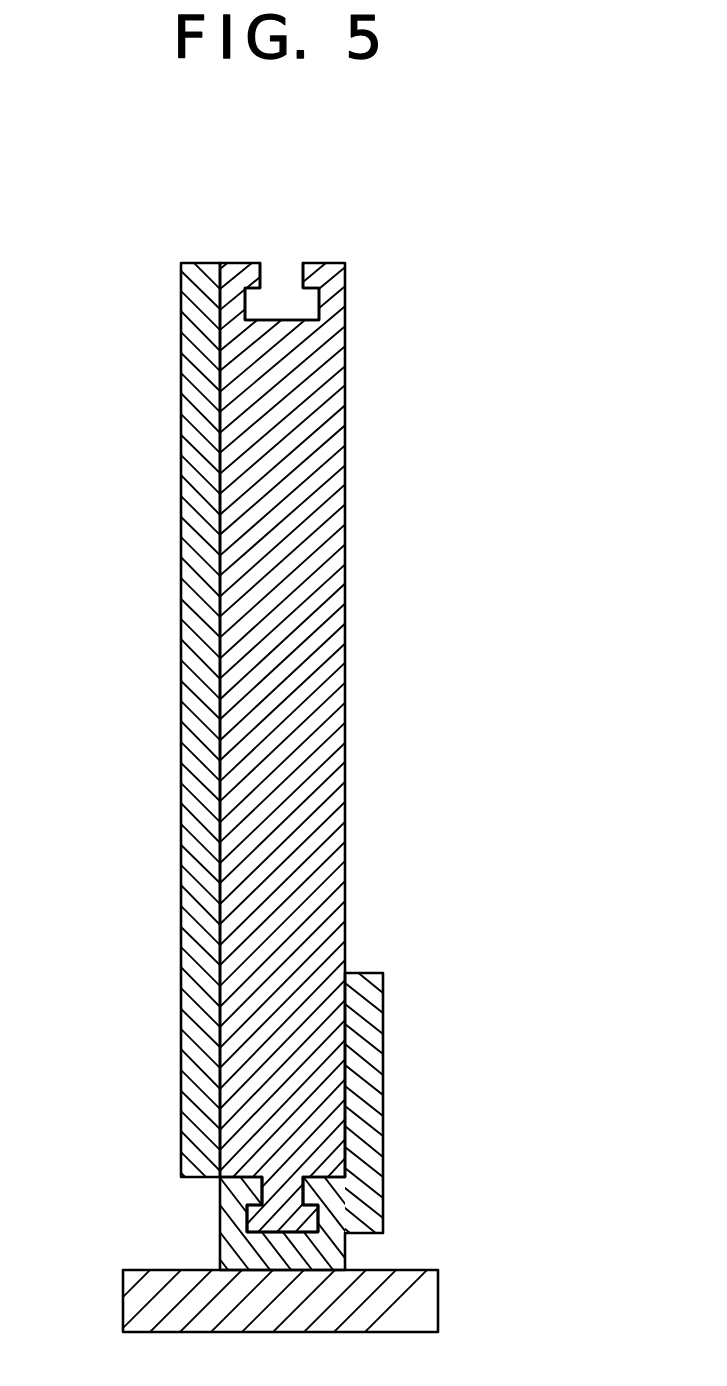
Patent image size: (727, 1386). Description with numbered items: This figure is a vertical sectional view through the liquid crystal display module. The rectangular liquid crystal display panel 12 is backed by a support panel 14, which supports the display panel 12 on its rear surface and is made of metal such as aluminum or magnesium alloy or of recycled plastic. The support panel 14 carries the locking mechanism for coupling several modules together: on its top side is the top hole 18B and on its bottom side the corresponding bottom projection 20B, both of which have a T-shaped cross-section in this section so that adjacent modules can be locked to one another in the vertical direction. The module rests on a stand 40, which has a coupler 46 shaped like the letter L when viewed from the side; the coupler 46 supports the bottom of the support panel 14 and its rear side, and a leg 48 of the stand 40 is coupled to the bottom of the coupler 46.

The liquid crystal display panel 12 is at (181, 673).
The support panel 14 is at (345, 545).
The top hole 18B is at (284, 275).
The bottom projection 20B is at (246, 1215).
The stand 40 is at (341, 1137).
The coupler 46 is at (383, 1147).
The leg 48 is at (438, 1298).